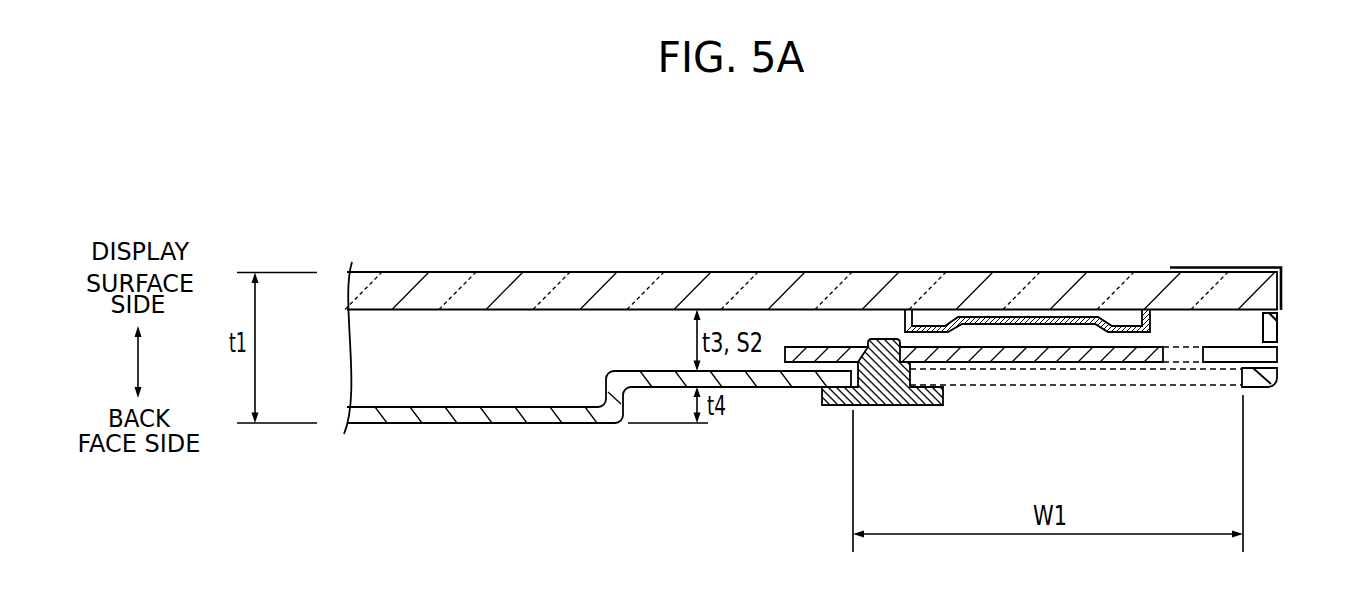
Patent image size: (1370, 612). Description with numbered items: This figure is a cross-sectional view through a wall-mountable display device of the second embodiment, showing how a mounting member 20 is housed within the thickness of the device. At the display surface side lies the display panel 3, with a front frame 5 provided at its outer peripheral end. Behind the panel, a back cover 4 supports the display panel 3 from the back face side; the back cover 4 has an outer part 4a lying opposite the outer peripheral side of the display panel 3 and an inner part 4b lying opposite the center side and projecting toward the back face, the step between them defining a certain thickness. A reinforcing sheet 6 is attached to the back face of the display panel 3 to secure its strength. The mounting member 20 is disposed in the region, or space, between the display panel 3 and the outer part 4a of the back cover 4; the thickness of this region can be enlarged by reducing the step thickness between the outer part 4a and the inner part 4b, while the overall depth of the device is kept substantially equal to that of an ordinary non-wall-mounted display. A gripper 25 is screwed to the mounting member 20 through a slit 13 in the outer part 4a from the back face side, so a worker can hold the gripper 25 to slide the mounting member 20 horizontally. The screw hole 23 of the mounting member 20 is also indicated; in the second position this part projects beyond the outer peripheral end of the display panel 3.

The display panel 3 is at (692, 272).
The back cover 4 is at (1279, 331).
The outer part 4a is at (768, 388).
The inner part 4b is at (515, 424).
The front frame 5 is at (1210, 267).
The reinforcing sheet 6 is at (990, 317).
The slit 13 is at (1092, 386).
The mounting member 20 is at (815, 347).
The screw hole 23 is at (1180, 347).
The gripper 25 is at (892, 406).